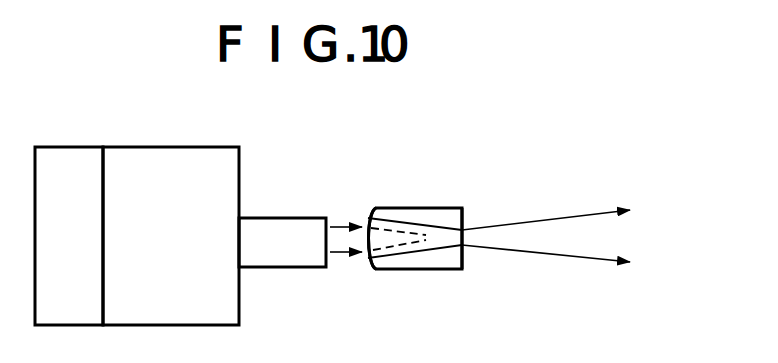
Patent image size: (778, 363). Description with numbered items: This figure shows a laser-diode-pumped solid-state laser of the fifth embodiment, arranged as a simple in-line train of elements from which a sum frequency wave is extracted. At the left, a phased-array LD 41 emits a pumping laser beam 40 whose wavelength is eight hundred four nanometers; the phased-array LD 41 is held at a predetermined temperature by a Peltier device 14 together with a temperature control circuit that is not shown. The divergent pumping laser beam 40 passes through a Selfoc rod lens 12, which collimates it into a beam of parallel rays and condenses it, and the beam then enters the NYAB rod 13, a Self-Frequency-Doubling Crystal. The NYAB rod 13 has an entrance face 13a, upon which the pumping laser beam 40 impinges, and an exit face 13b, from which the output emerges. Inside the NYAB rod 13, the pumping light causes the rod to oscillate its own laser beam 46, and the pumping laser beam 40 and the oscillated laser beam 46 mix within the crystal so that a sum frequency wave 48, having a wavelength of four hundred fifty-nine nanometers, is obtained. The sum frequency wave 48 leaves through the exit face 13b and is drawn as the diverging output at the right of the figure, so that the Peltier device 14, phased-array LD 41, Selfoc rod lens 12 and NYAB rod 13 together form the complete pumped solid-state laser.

The Peltier device 14 is at (65, 177).
The phased-array LD 41 is at (212, 168).
The Selfoc rod lens 12 is at (283, 233).
The pumping laser beam 40 is at (340, 255).
The NYAB rod 13 is at (434, 198).
The incident surface of lens element 13a is at (367, 217).
The exit surface of lens element 13b is at (465, 220).
The laser beam 46 is at (428, 252).
The sum frequency wave 48 is at (568, 257).